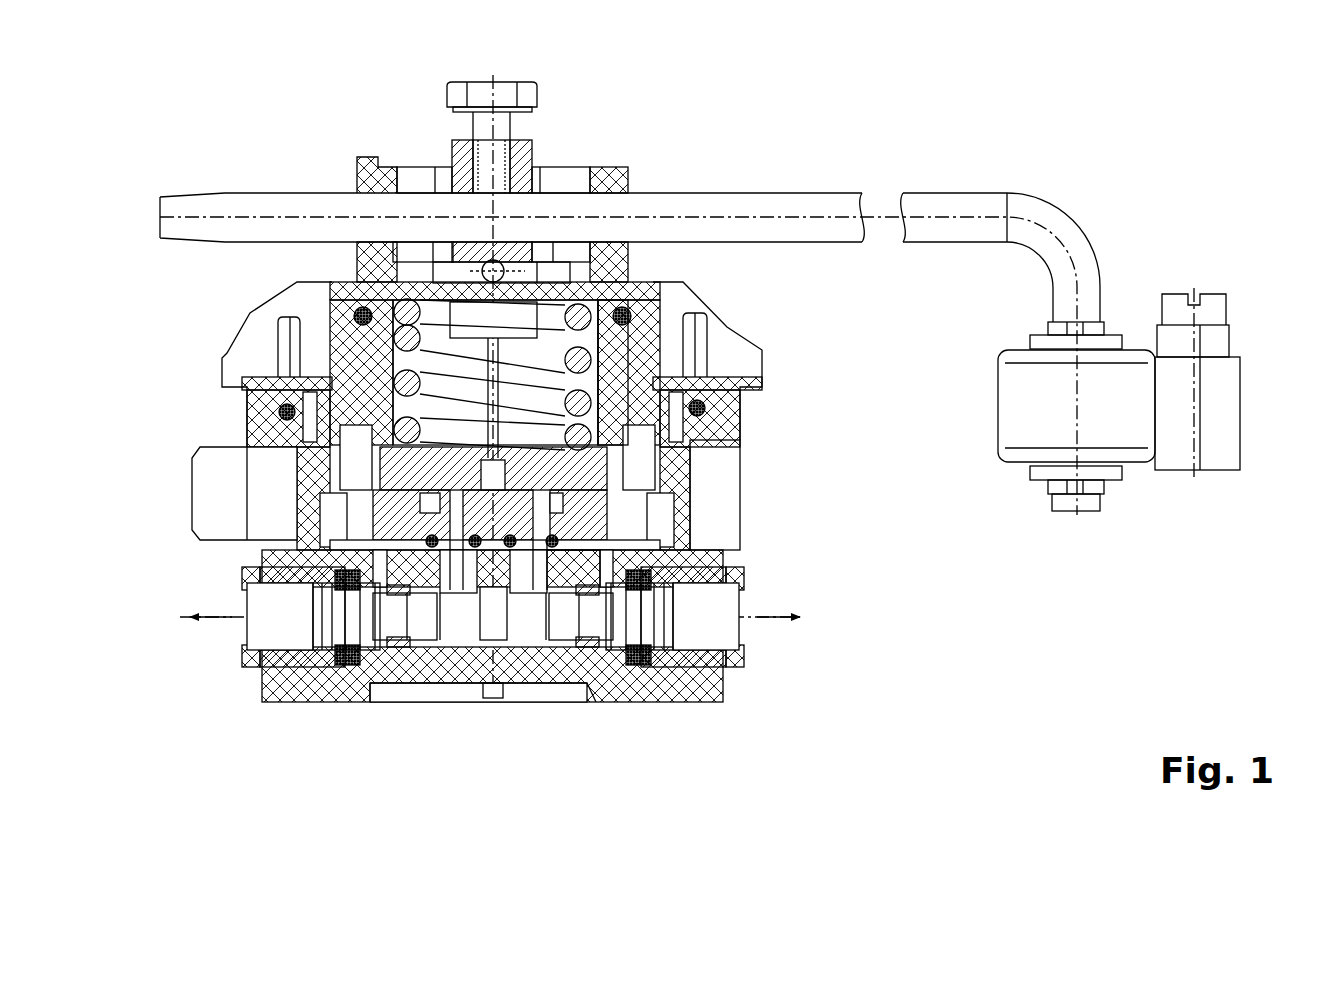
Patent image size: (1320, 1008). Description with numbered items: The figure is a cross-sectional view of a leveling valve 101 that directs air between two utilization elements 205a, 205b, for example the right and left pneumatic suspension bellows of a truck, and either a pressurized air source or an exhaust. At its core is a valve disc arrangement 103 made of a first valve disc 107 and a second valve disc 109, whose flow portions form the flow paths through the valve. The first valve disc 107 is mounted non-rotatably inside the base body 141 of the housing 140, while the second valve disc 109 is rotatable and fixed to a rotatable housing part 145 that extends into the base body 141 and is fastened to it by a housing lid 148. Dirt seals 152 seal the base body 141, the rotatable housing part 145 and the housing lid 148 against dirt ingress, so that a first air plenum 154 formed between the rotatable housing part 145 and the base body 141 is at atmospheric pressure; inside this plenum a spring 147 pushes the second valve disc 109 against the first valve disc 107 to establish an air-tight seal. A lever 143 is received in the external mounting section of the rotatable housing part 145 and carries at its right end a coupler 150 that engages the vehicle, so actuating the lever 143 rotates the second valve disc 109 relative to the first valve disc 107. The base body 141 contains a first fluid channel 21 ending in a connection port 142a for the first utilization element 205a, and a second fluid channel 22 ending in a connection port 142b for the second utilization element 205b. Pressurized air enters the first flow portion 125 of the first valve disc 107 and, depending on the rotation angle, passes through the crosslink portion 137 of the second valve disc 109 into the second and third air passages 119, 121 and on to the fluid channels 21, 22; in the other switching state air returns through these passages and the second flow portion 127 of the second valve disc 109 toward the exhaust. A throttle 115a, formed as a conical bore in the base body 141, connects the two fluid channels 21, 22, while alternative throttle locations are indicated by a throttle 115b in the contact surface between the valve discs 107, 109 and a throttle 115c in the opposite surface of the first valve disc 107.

The leveling valve 101 is at (702, 110).
The valve disc arrangement 103 is at (193, 458).
The first valve disc 107 is at (593, 520).
The second valve disc 109 is at (590, 467).
The throttle 115a is at (493, 627).
The throttle 115b is at (503, 477).
The throttle 115c is at (523, 590).
The second air passage 119 is at (562, 560).
The third air passage 121 is at (458, 523).
The first flow portion 125 is at (560, 507).
The second flow portion 127 is at (427, 505).
The crosslink portion 137 is at (385, 368).
The housing 140 is at (226, 310).
The base body 141 is at (673, 485).
The connection port 142a is at (688, 650).
The connection port 142b is at (285, 650).
The lever 143 is at (766, 198).
The rotatable housing part 145 is at (616, 168).
The spring 147 is at (608, 362).
The housing lid 148 is at (686, 392).
The coupler 150 is at (1010, 410).
The dirt seal 152 is at (362, 308).
The first air plenum 154 is at (487, 462).
The utilization element 205a is at (778, 613).
The utilization element 205b is at (190, 613).
The first fluid channel 21 is at (543, 630).
The second fluid channel 22 is at (457, 630).